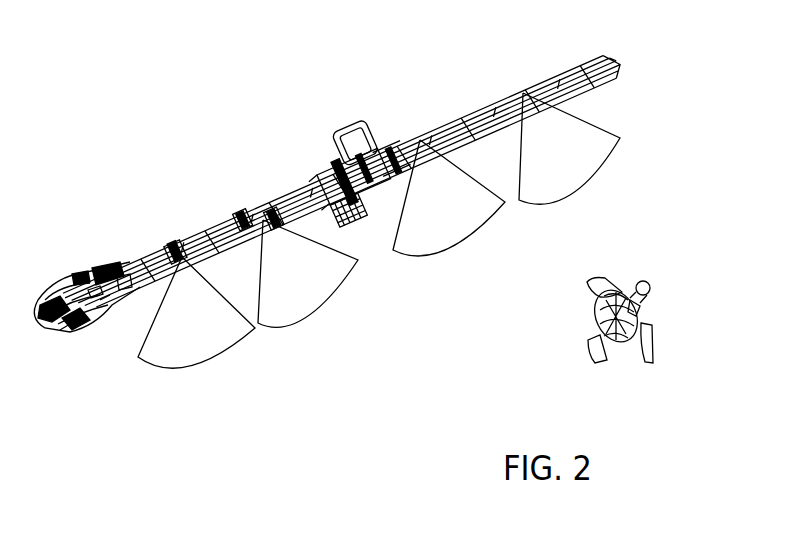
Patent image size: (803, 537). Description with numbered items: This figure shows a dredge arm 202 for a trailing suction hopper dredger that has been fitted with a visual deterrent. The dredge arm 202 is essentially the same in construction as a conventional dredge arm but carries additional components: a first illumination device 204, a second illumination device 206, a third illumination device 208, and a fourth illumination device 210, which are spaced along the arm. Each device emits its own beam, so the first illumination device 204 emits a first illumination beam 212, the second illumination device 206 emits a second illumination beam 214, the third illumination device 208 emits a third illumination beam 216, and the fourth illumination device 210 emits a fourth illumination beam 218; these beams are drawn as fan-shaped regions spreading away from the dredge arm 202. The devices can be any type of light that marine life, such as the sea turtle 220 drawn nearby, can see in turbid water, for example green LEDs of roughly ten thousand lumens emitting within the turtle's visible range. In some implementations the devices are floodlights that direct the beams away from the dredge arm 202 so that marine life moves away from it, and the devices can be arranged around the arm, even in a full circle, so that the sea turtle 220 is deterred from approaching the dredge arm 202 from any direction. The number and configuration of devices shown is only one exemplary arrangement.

The dredge arm 202 is at (262, 90).
The first illumination device 204 is at (525, 85).
The second illumination device 206 is at (417, 130).
The third illumination device 208 is at (257, 200).
The fourth illumination device 210 is at (173, 250).
The first illumination beam 212 is at (580, 173).
The second illumination beam 214 is at (458, 237).
The third illumination beam 216 is at (312, 300).
The fourth illumination beam 218 is at (197, 353).
The sea turtle 220 is at (635, 305).